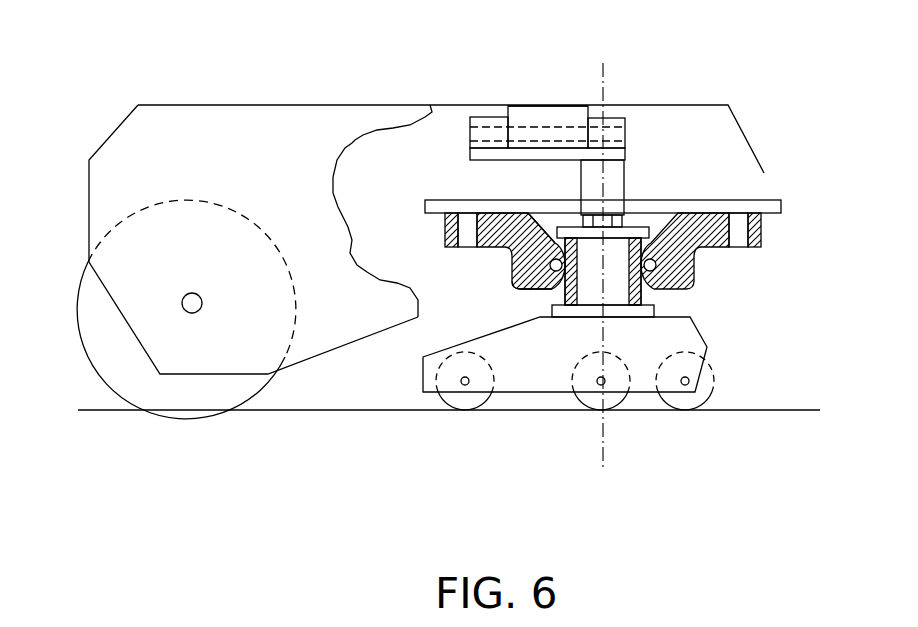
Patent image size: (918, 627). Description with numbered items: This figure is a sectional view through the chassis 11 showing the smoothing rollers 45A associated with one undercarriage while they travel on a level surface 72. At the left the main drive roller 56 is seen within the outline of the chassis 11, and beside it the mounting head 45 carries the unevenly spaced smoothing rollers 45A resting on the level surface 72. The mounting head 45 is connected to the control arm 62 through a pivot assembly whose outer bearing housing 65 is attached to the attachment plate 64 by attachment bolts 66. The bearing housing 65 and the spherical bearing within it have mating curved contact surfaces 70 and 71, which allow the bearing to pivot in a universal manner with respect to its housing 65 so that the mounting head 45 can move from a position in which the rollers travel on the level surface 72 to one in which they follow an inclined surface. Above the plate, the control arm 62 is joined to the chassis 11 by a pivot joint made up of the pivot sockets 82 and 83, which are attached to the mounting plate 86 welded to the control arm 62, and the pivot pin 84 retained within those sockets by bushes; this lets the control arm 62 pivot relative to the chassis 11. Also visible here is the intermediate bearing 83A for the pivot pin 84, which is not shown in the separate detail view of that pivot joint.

The chassis 11 is at (200, 124).
The main drive roller 56 is at (132, 357).
The control arm 62 is at (617, 172).
The attachment plate 64 is at (443, 205).
The outer bearing housing 65 is at (692, 265).
The attachment bolts 66 is at (747, 232).
The curved contact surface 70 is at (513, 292).
The curved contact surface 71 is at (555, 243).
The level surface 72 is at (770, 410).
The pivot socket 82 is at (488, 125).
The pivot socket 83 is at (613, 127).
The intermediate bearing 83A is at (550, 104).
The pivot pin 84 is at (528, 123).
The mounting plate 86 is at (617, 155).
The mounting head 45 is at (690, 333).
The smoothing rollers 45A is at (592, 400).